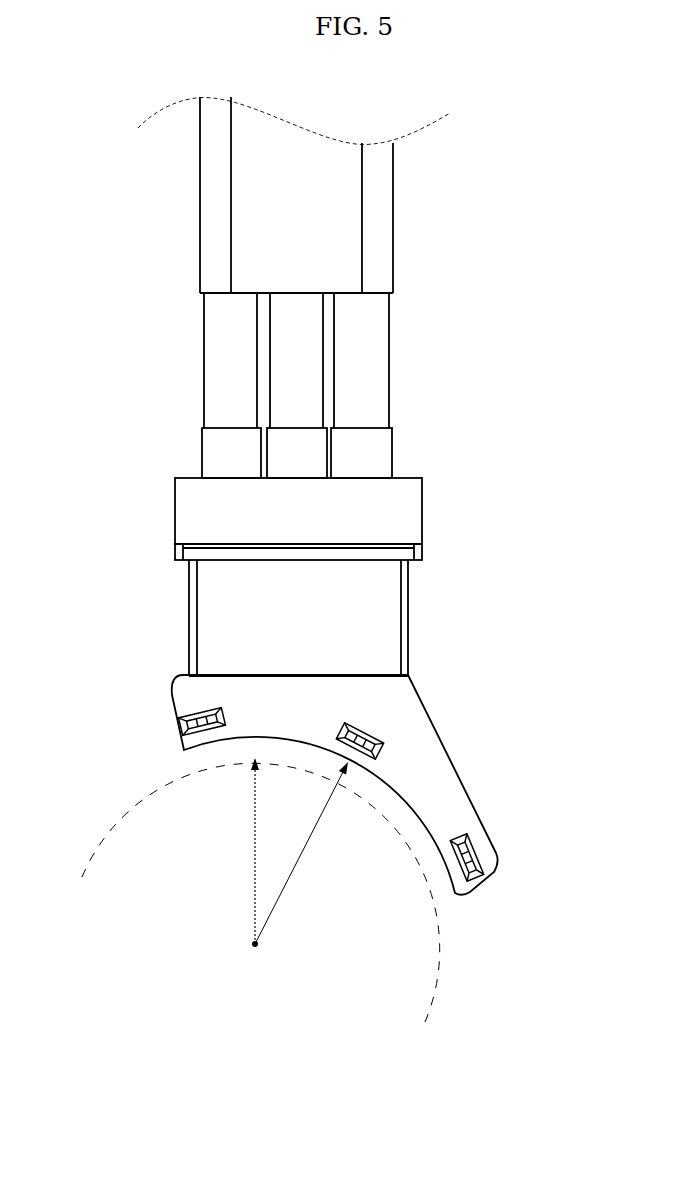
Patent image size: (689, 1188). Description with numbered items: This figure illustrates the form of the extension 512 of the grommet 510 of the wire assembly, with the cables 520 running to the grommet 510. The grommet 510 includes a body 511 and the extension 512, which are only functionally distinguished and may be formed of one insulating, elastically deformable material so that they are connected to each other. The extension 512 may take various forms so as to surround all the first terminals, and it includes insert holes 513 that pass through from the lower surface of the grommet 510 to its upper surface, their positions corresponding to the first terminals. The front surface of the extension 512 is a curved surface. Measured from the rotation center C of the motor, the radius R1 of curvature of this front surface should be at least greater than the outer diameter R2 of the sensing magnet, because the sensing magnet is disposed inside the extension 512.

The grommet 510 is at (395, 727).
The body 511 is at (409, 607).
The extension 512 is at (375, 785).
The insert holes 513 is at (478, 852).
The cables 520 is at (367, 353).
The rotation center of the motor C is at (254, 960).
The radius of curvature of the front surface of the extension R1 is at (303, 855).
The outer diameter of the sensing magnet R2 is at (255, 848).